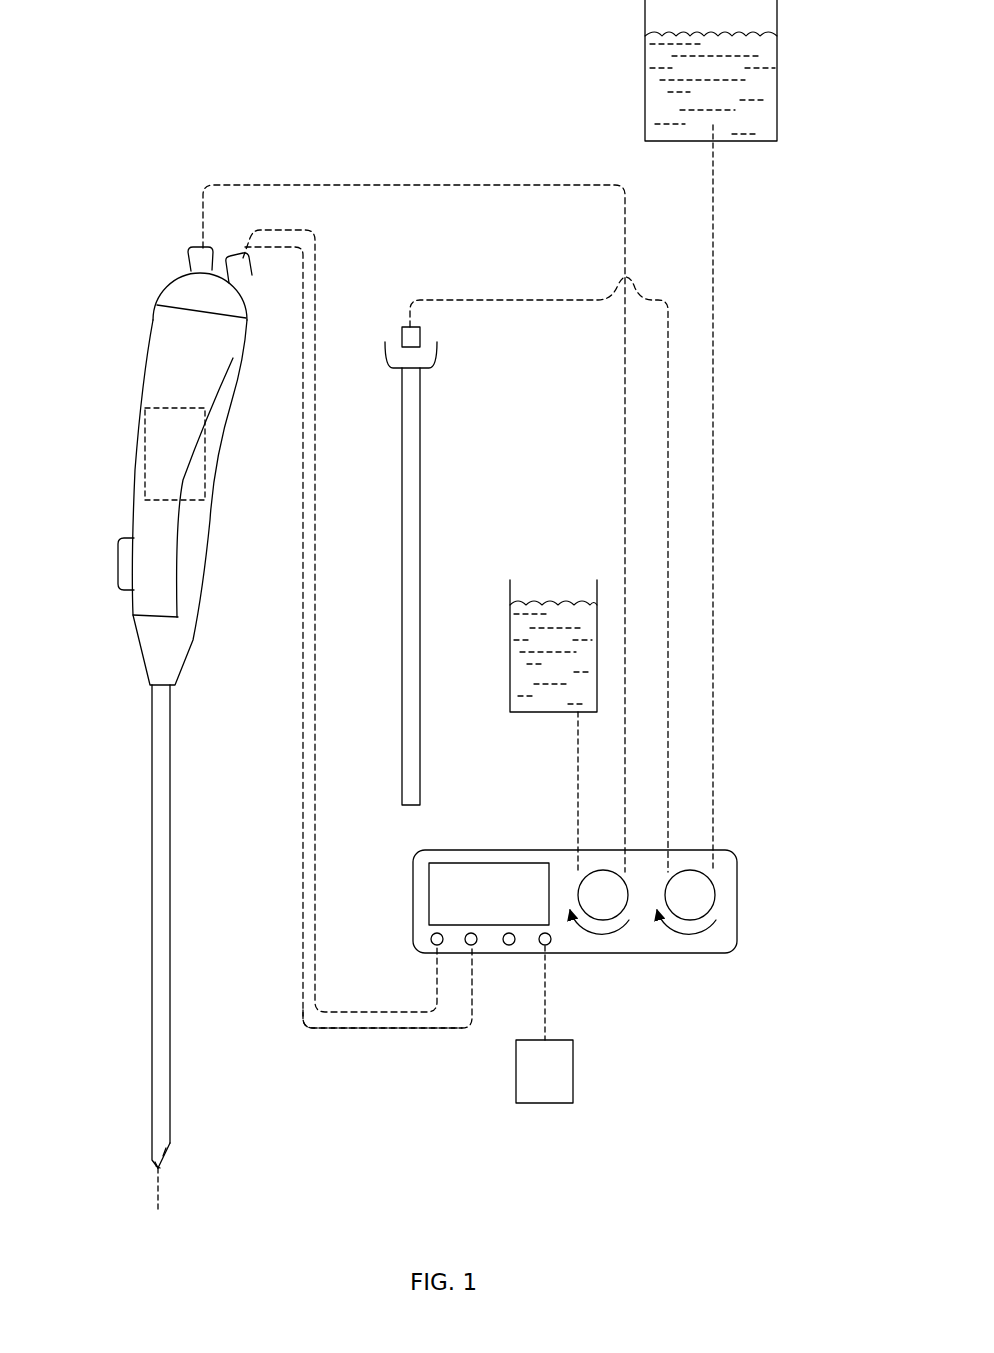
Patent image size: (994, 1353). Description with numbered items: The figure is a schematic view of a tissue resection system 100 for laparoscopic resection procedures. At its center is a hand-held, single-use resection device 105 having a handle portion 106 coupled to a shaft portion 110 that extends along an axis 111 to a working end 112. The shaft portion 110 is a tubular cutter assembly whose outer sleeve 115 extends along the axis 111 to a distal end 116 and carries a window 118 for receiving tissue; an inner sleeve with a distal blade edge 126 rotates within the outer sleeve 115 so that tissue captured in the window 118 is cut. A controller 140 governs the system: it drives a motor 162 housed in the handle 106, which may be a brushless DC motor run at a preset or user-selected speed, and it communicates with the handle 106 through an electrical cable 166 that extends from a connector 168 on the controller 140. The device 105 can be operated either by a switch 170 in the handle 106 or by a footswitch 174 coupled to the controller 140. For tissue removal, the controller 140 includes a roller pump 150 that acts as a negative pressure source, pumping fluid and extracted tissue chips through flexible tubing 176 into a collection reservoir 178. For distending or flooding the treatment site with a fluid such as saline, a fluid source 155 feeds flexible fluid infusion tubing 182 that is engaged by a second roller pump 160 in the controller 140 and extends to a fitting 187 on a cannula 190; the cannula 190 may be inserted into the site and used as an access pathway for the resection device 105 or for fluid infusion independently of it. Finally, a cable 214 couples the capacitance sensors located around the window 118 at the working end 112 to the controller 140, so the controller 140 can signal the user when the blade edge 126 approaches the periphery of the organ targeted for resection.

The tissue resection system 100 is at (186, 94).
The resection device 105 is at (104, 298).
The handle portion 106 is at (146, 400).
The shaft portion 110 is at (131, 733).
The axis 111 is at (160, 1190).
The working end 112 is at (156, 1164).
The outer sleeve 115 is at (152, 838).
The distal end 116 is at (157, 1168).
The window 118 is at (172, 1143).
The distal blade edge 126 is at (168, 1150).
The controller 140 is at (738, 811).
The roller pump 150 is at (603, 922).
The fluid source 155 is at (778, 68).
The second roller pump 160 is at (716, 893).
The motor 162 is at (146, 452).
The electrical cable 166 is at (318, 258).
The connector 168 is at (436, 942).
The switch 170 is at (118, 562).
The footswitch 174 is at (544, 1104).
The flexible tubing 176 is at (396, 185).
The collection reservoir 178 is at (510, 592).
The fluid infusion tubing 182 is at (540, 300).
The fitting 187 is at (420, 336).
The cannula 190 is at (421, 440).
The cable 214 is at (395, 1030).